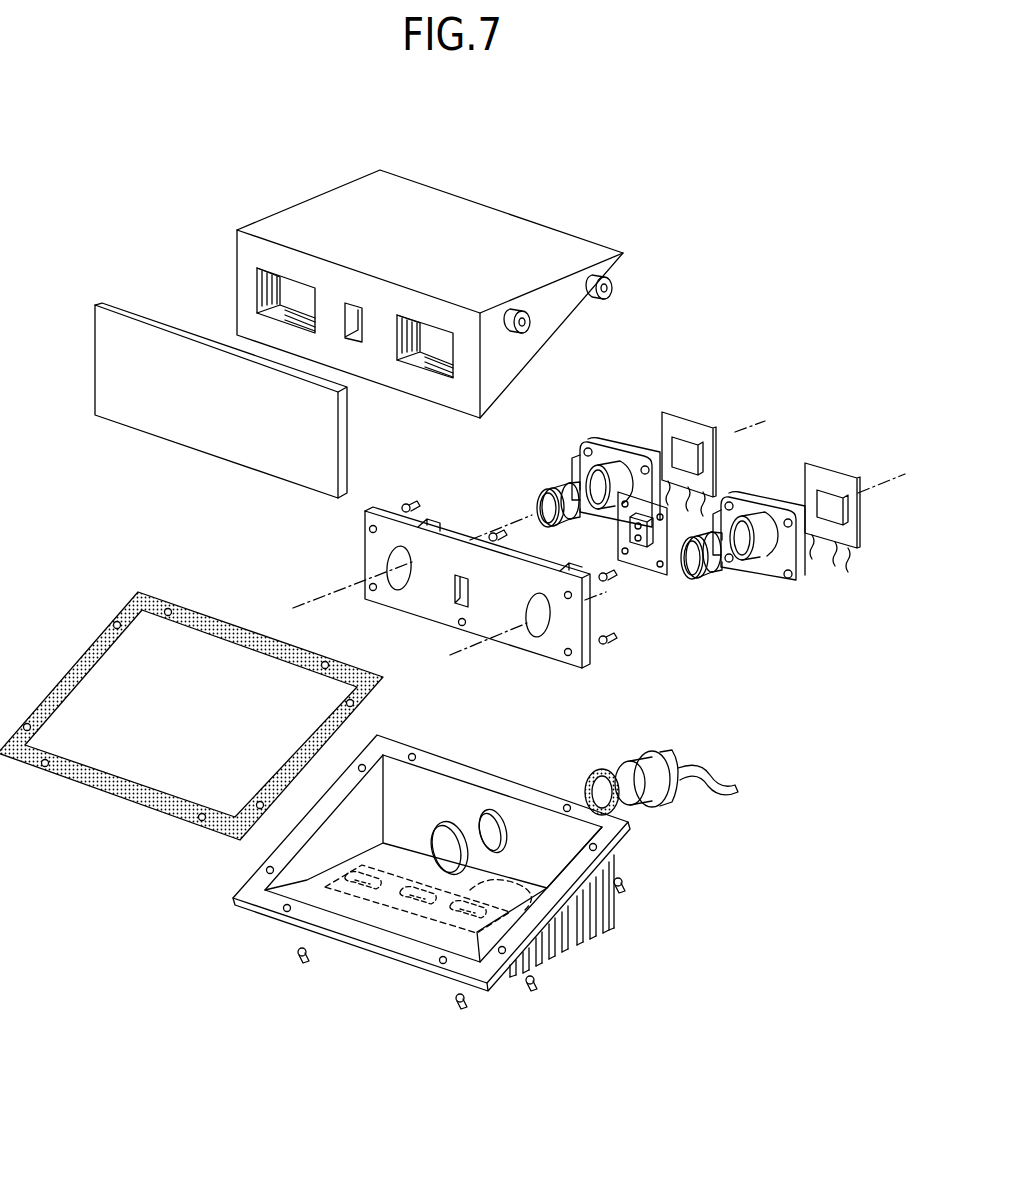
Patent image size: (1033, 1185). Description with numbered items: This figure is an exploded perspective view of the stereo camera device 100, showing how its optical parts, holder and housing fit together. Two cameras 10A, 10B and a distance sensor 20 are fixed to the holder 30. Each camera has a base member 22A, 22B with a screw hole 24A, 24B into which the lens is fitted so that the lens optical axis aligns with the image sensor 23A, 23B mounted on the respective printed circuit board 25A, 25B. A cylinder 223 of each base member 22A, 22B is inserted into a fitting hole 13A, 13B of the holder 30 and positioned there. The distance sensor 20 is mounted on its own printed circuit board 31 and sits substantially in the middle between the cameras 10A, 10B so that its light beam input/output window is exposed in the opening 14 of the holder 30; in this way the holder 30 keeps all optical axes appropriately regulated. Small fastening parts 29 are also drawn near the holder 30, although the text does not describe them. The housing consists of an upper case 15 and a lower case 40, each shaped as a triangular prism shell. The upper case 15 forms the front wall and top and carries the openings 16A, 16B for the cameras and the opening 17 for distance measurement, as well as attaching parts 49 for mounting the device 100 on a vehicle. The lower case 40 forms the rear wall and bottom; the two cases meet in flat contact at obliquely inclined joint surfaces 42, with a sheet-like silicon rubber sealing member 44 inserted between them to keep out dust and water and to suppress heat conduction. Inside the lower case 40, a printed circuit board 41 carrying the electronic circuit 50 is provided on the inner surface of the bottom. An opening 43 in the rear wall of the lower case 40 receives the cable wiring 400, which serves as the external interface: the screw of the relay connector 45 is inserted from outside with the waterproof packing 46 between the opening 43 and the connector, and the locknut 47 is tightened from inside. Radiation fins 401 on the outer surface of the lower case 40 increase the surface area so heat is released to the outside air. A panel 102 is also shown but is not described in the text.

The stereo camera device 100 is at (842, 148).
The upper case 15 is at (332, 205).
The opening for camera 16A is at (432, 345).
The opening for camera 16B is at (262, 289).
The opening for distance measurement 17 is at (352, 342).
The attaching part 49 is at (530, 315).
The lid plate 102 is at (207, 430).
The holder 30 is at (378, 560).
The fitting hole 13A is at (530, 636).
The fitting hole 13B is at (392, 585).
The opening 14 is at (456, 602).
The screw 29 is at (428, 522).
The camera 10A is at (847, 590).
The camera 10B is at (607, 380).
The base member 22A is at (776, 500).
The base member 22B is at (632, 450).
The screw hole 24A is at (740, 547).
The screw hole 24B is at (590, 474).
The cylinder 223 is at (600, 466).
The image sensor 23A is at (835, 500).
The image sensor 23B is at (692, 443).
The printed circuit board 25A is at (822, 485).
The printed circuit board 25B is at (680, 432).
The distance sensor 20 is at (665, 555).
The printed circuit board 31 is at (668, 553).
The sealing member 44 is at (145, 802).
The lower case 40 is at (645, 905).
The joint surface 42 is at (268, 888).
The printed circuit board 41 is at (425, 918).
The opening 43 is at (494, 812).
The locknut 47 is at (448, 828).
The radiation fin 401 is at (583, 917).
The electronic circuit 50 is at (530, 930).
The cable wiring 400 is at (622, 735).
The relay connector 45 is at (665, 787).
The waterproof packing 46 is at (626, 808).